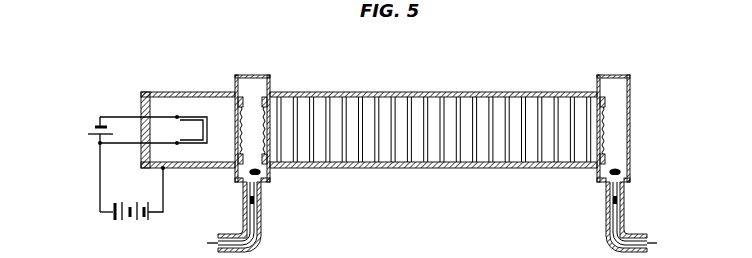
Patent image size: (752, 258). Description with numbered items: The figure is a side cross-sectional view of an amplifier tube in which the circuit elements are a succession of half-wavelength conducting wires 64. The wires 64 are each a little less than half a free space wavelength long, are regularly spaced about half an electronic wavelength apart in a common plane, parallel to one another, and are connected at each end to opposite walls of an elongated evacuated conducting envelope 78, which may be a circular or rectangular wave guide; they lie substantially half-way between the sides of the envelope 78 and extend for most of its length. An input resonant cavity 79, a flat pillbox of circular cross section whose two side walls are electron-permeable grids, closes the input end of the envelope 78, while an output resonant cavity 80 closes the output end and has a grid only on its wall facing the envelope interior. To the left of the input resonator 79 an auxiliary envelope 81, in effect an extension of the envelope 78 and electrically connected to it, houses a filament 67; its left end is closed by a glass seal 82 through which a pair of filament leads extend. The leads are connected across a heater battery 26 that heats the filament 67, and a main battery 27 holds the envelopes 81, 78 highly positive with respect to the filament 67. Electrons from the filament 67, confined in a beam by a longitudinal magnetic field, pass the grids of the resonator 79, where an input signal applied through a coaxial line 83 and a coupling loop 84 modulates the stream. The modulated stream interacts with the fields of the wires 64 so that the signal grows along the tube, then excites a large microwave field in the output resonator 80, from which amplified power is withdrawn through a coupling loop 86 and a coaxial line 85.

The heater battery 26 is at (92, 126).
The main battery 27 is at (131, 224).
The half-wavelength conducting wires 64 is at (434, 156).
The filament 67 is at (198, 114).
The elongated evacuated conducting envelope 78 is at (466, 92).
The input resonant cavity 79 is at (250, 75).
The output resonant cavity 80 is at (612, 75).
The auxiliary envelope 81 is at (190, 91).
The glass seal 82 is at (141, 101).
The coaxial line 83 is at (262, 229).
The coupling loop 84 is at (263, 173).
The coaxial line 85 is at (606, 228).
The coupling loop 86 is at (621, 172).